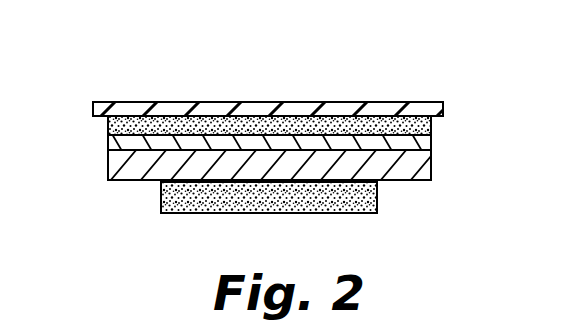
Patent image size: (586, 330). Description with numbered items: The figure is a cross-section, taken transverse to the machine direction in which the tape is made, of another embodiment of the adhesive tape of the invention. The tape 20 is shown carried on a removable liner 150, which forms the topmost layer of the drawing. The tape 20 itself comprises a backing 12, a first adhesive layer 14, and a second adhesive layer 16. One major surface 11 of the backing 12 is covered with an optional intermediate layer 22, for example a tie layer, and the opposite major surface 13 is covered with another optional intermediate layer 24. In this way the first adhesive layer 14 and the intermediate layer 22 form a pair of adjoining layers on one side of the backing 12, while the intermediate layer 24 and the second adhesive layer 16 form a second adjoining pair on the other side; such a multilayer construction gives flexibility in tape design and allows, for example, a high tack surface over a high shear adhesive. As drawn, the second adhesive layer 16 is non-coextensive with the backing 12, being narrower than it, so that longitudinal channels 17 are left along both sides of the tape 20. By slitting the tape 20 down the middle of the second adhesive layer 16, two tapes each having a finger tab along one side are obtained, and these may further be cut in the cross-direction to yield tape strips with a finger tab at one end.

The tape 20 is at (326, 50).
The removable liner 150 is at (404, 108).
The major surface 11 is at (428, 133).
The backing 12 is at (428, 167).
The major surface 13 is at (418, 181).
The first adhesive layer 14 is at (112, 127).
The intermediate layer 22 is at (117, 143).
The second adhesive layer 16 is at (290, 214).
The longitudinal channels 17 is at (150, 183).
The intermediate layer 24 is at (382, 183).